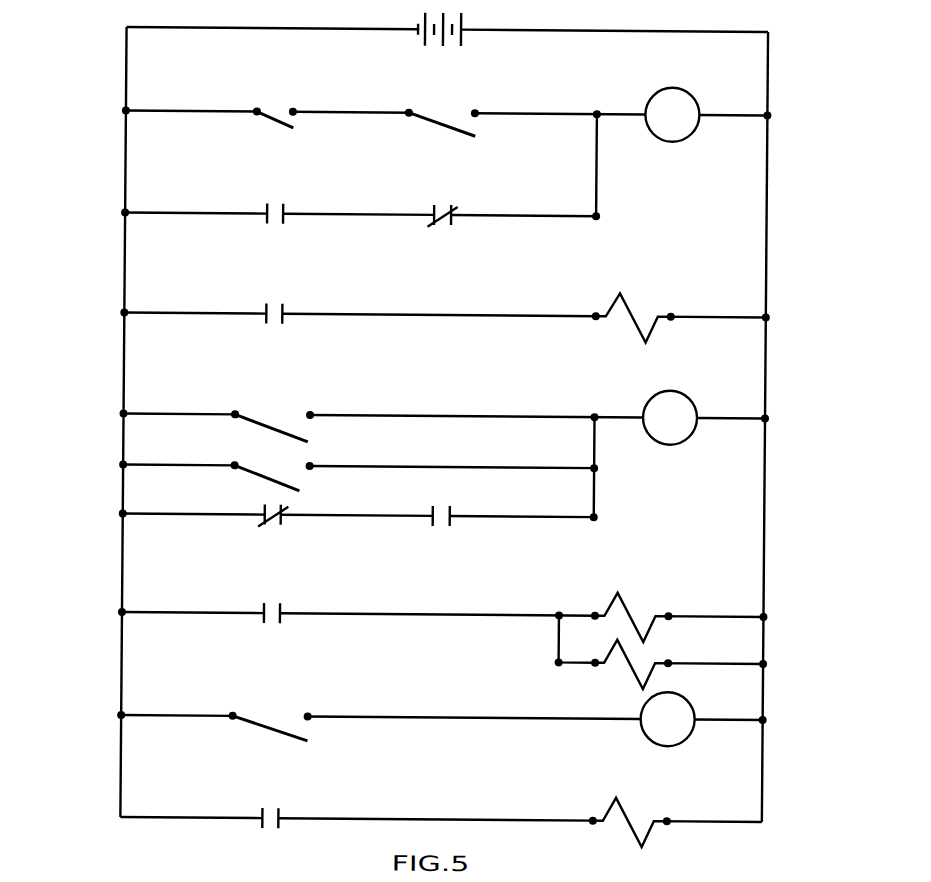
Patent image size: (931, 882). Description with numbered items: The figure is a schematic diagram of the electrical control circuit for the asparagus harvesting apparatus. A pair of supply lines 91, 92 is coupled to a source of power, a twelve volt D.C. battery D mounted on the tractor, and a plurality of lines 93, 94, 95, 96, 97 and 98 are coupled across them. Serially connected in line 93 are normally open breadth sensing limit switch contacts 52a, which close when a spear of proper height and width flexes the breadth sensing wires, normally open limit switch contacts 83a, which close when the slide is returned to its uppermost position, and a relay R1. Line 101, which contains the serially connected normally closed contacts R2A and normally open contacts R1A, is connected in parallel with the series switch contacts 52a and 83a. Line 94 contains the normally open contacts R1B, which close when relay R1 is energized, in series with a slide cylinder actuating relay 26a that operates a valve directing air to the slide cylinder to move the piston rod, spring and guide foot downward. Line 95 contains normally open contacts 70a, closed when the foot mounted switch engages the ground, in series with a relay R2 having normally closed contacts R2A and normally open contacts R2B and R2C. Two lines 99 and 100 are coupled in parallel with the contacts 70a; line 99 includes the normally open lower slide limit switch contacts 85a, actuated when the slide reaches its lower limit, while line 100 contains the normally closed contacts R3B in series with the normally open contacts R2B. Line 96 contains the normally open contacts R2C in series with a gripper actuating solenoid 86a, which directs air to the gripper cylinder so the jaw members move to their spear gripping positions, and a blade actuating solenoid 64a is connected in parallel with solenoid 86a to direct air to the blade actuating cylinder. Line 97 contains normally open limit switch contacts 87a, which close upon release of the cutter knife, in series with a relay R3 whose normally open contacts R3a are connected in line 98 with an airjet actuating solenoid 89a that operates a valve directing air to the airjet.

The power supply line (left rail) 91 is at (124, 56).
The line 92 is at (765, 60).
The battery D is at (414, 16).
The line 93 is at (146, 113).
The breadth sensing limit switch contacts 52a is at (273, 119).
The limit switch contacts 83a is at (441, 124).
The relay R1 is at (677, 95).
The line 101 is at (146, 215).
The normally open contacts R1A is at (270, 205).
The normally closed contacts R2A is at (444, 207).
The line 94 is at (146, 315).
The normally open limit switch contacts R1B is at (274, 305).
The slide cylinder actuating relay 26a is at (641, 311).
The line 95 is at (147, 416).
The limit switch contacts 70a is at (268, 425).
The relay R2 is at (677, 405).
The line 99 is at (147, 467).
The lower slide limit switch contacts 85a is at (281, 482).
The line 100 is at (144, 516).
The normally closed contacts R3B is at (273, 522).
The normally open contacts R2B is at (438, 528).
The line 96 is at (146, 614).
The normally open switch contacts R2C is at (270, 609).
The gripper actuating solenoid 86a is at (632, 608).
The blade actuating solenoid 64a is at (627, 666).
The line 97 is at (148, 717).
The limit switch contacts 87a is at (268, 726).
The relay R3 is at (677, 709).
The line 98 is at (148, 819).
The normally open contacts R3a is at (281, 806).
The airjet actuating solenoid 89a is at (641, 816).